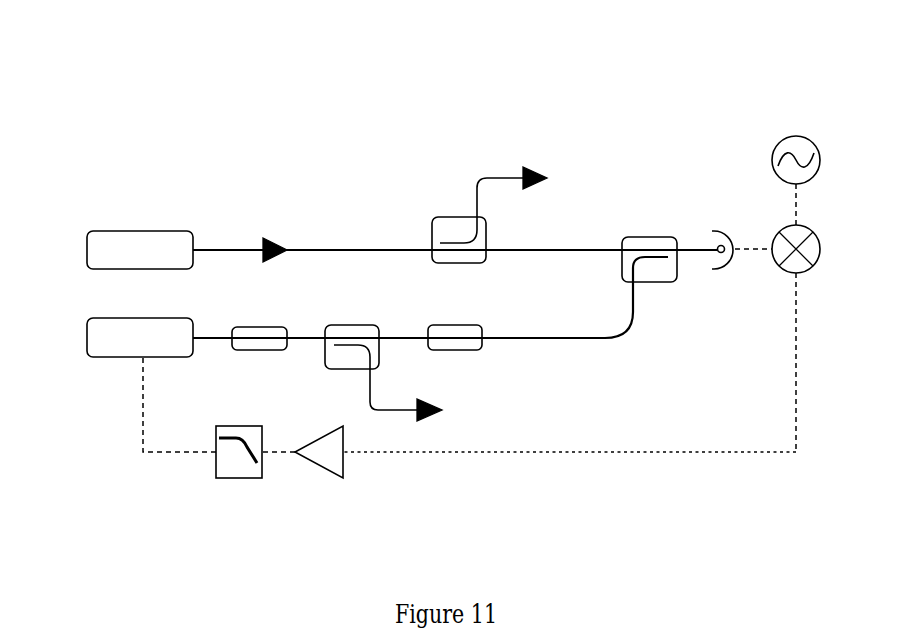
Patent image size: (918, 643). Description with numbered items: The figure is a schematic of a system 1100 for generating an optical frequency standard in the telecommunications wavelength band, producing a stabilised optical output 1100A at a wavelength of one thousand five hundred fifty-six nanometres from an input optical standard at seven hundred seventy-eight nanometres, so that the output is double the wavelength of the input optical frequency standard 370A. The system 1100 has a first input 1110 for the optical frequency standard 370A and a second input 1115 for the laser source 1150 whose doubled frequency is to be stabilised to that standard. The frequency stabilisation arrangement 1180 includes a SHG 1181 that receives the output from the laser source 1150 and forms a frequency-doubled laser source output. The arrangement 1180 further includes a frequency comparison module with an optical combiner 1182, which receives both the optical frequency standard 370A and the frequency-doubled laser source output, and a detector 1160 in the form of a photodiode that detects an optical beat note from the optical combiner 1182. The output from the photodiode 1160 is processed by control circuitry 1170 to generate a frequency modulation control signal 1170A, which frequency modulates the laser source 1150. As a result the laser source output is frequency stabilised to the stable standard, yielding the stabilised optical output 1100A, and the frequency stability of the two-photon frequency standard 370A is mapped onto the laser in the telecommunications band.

The telecommunications wavelength band optical frequency standard generating system 1100 is at (100, 81).
The first input 1110 is at (244, 248).
The optical frequency standard 370A is at (373, 250).
The laser source 1150 is at (87, 355).
The second input 1115 is at (226, 336).
The frequency stabilisation arrangement 1180 is at (451, 198).
The SHG 1181 is at (483, 348).
The optical combiner 1182 is at (658, 283).
The detector 1160 is at (729, 228).
The control circuitry 1170 is at (476, 336).
The frequency modulation control signal 1170A is at (197, 456).
The stabilised optical output 1100A is at (569, 419).